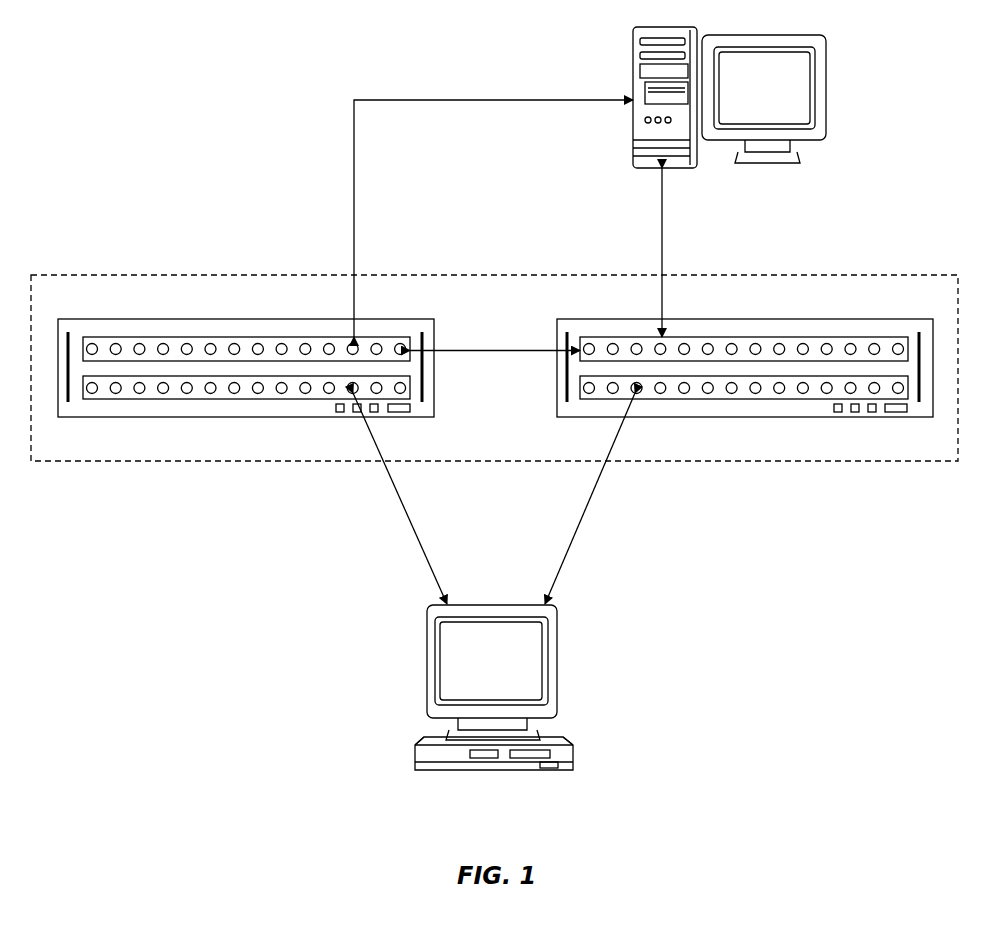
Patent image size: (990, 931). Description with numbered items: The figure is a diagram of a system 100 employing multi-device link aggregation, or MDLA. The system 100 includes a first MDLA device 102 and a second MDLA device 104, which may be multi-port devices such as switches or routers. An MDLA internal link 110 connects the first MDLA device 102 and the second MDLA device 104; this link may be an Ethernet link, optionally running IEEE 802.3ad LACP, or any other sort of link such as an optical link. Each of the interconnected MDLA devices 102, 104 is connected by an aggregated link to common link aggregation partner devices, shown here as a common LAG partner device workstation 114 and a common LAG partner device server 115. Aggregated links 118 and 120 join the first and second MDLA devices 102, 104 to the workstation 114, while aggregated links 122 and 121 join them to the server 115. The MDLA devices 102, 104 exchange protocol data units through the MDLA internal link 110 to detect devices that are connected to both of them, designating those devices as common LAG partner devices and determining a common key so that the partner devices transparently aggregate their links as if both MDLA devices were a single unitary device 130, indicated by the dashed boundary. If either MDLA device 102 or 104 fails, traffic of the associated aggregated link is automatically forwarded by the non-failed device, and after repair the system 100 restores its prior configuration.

The system 100 is at (236, 186).
The first MDLA device 102 is at (424, 320).
The second MDLA device 104 is at (569, 320).
The MDLA internal link 110 is at (468, 349).
The common LAG partner device workstation 114 is at (557, 652).
The common LAG partner device server 115 is at (633, 68).
The aggregated link 118 is at (400, 495).
The aggregated link 120 is at (594, 492).
The aggregated link 121 is at (662, 263).
The aggregated link 122 is at (354, 207).
The single unitary device 130 is at (949, 313).